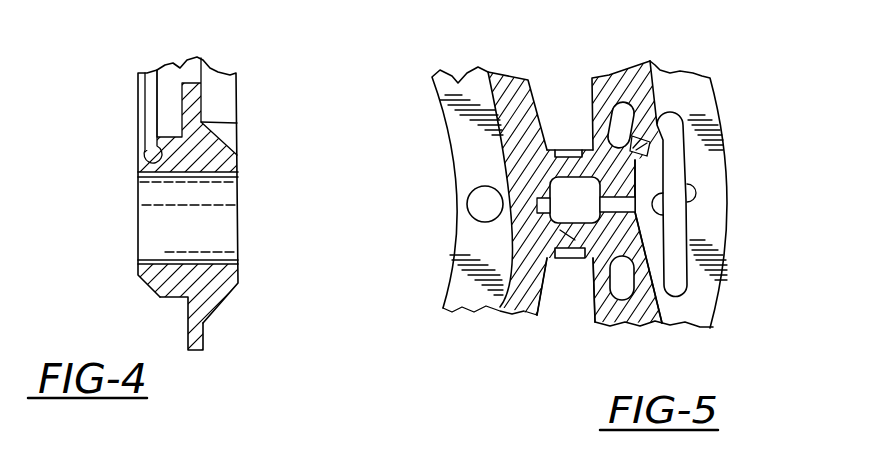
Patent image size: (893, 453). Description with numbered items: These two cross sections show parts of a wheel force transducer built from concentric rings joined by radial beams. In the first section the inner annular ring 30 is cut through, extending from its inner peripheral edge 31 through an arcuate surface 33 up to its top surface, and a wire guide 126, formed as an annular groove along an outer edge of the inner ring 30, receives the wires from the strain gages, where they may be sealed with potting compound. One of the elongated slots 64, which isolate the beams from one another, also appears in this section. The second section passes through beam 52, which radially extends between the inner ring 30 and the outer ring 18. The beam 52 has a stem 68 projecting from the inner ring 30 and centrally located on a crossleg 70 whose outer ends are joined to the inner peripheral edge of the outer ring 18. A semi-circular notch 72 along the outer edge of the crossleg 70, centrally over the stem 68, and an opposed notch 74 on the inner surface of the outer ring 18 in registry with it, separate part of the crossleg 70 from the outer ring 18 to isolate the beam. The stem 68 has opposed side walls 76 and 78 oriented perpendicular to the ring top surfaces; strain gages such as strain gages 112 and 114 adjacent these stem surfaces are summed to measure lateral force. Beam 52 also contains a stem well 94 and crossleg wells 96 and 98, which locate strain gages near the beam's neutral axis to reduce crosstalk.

In FIG. 5, the outer ring 18 is at (710, 303).
In FIG. 4, the inner annular ring 30 is at (232, 305).
In FIG. 5, the inner annular ring 30 is at (468, 90).
In FIG. 4, the inner peripheral edge 31 is at (204, 343).
In FIG. 4, the arcuate surface 33 is at (237, 123).
In FIG. 5, the beam 52 is at (612, 68).
In FIG. 4, the elongated slot 64 is at (222, 258).
In FIG. 5, the stem 68 is at (567, 237).
In FIG. 5, the crossleg 70 is at (643, 313).
In FIG. 5, the notch 72 is at (643, 138).
In FIG. 5, the opposed notch 74 is at (696, 200).
In FIG. 5, the side wall 76 is at (555, 152).
In FIG. 5, the side wall 78 is at (585, 258).
In FIG. 5, the stem well 94 is at (550, 193).
In FIG. 5, the crossleg well 96 is at (619, 110).
In FIG. 5, the crossleg well 98 is at (620, 292).
In FIG. 5, the strain gage 112 is at (567, 148).
In FIG. 5, the strain gage 114 is at (555, 258).
In FIG. 4, the wire guide 126 is at (145, 150).